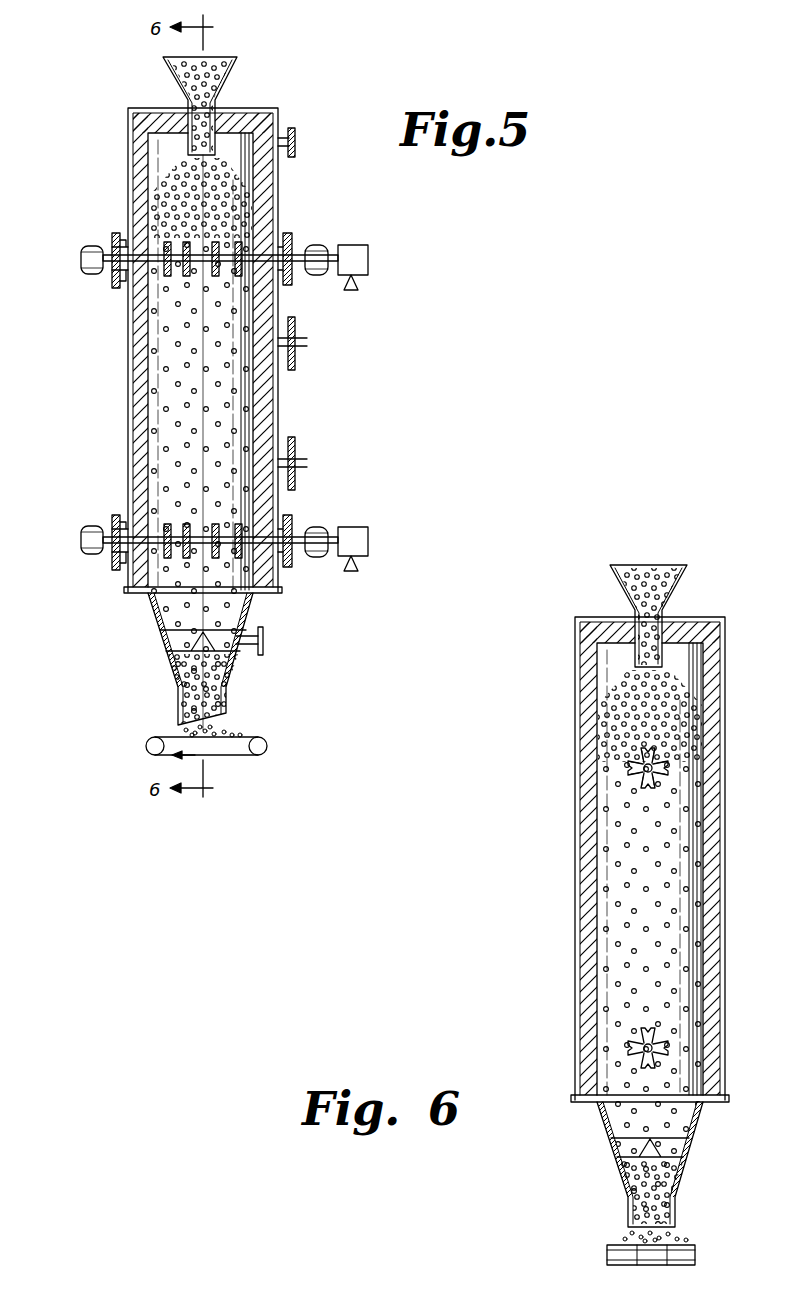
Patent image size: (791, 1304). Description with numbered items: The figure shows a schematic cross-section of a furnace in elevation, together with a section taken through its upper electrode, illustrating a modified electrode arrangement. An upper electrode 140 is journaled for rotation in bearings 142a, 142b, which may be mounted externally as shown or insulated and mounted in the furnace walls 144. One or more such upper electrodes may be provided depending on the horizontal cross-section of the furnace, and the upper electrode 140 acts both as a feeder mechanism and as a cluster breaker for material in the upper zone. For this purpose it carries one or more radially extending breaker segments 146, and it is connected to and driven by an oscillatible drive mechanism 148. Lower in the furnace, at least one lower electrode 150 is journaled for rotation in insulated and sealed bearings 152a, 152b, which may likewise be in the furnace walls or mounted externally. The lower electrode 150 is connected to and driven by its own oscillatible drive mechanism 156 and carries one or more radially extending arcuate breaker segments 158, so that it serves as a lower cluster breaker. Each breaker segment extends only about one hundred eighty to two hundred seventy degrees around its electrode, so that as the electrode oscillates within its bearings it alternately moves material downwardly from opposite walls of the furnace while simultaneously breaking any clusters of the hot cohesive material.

In FIG. 5, the upper electrode 140 is at (299, 252).
In FIG. 6, the upper electrode 140 is at (668, 761).
In FIG. 5, the bearing 142a is at (90, 246).
In FIG. 5, the bearing 142b is at (316, 245).
In FIG. 5, the furnace walls 144 is at (277, 178).
In FIG. 5, the breaker segments 146 is at (237, 277).
In FIG. 6, the breaker segments 146 is at (668, 782).
In FIG. 5, the oscillatible drive mechanism 148 is at (369, 262).
In FIG. 5, the lower electrode 150 is at (128, 566).
In FIG. 5, the bearing 152a is at (90, 526).
In FIG. 5, the bearing 152b is at (316, 527).
In FIG. 5, the oscillatible drive mechanism 156 is at (369, 542).
In FIG. 5, the arcuate breaker segments 158 is at (238, 524).
In FIG. 6, the arcuate breaker segments 158 is at (630, 1042).